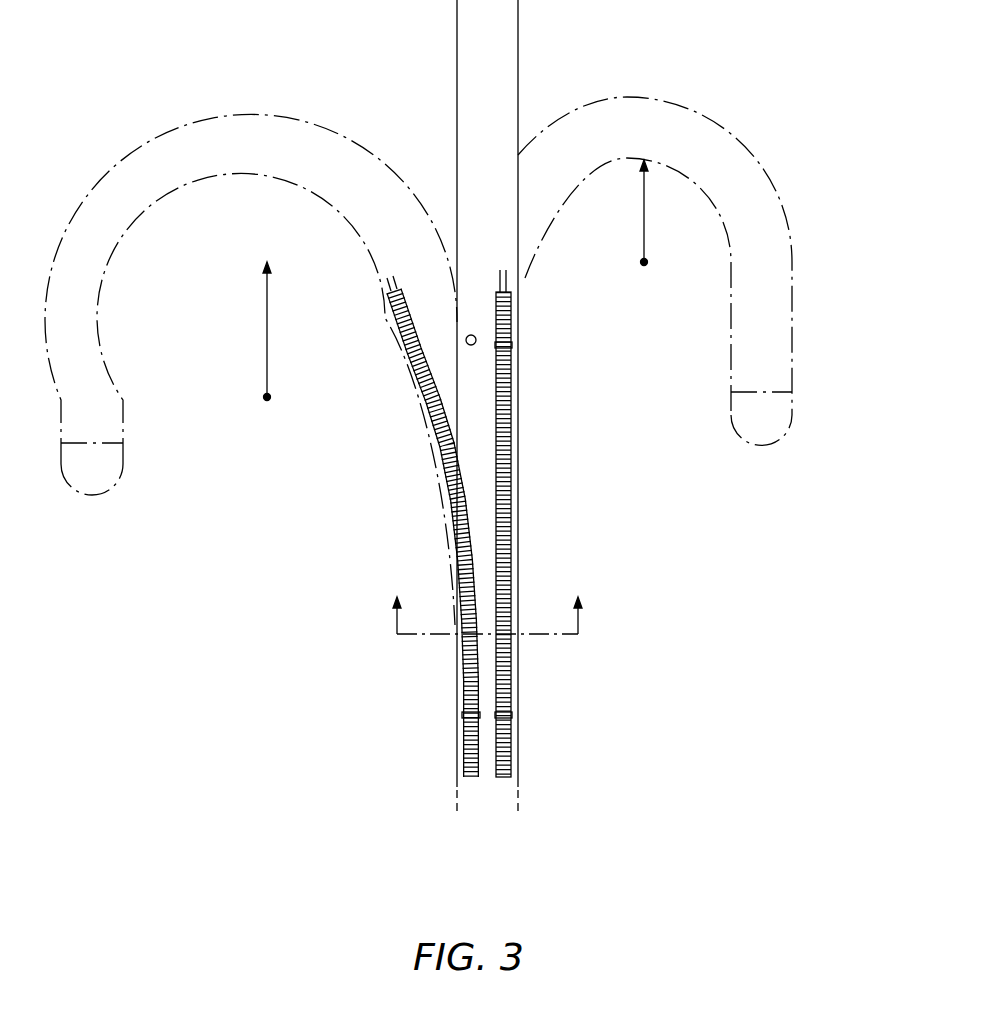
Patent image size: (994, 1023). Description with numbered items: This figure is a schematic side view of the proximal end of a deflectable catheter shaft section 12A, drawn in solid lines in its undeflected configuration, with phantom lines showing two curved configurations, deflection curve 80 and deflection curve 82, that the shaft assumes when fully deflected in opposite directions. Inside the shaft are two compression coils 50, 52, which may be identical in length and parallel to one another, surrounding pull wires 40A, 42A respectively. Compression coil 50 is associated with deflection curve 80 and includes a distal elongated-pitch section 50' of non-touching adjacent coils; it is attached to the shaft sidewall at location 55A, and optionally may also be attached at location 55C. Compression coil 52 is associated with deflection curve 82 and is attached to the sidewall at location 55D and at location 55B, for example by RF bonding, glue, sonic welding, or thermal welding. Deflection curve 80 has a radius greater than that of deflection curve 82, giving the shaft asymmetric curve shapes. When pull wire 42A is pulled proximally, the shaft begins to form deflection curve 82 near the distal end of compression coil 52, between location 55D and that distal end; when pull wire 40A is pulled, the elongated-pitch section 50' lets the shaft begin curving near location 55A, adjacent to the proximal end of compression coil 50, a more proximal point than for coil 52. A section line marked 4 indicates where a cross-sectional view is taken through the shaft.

The deflectable catheter shaft section 12A is at (518, 63).
The deflection curve 80 is at (176, 190).
The deflection curve 82 is at (770, 132).
The pull wire 40A is at (388, 288).
The pull wire 42A is at (510, 278).
The compression coil 50 is at (387, 530).
The distal elongated-pitch section 50' is at (387, 530).
The compression coil 52 is at (557, 530).
The location 55A is at (468, 715).
The location 55B is at (506, 715).
The location 55C is at (471, 335).
The location 55D is at (506, 345).
The section line 4- 4 is at (490, 601).